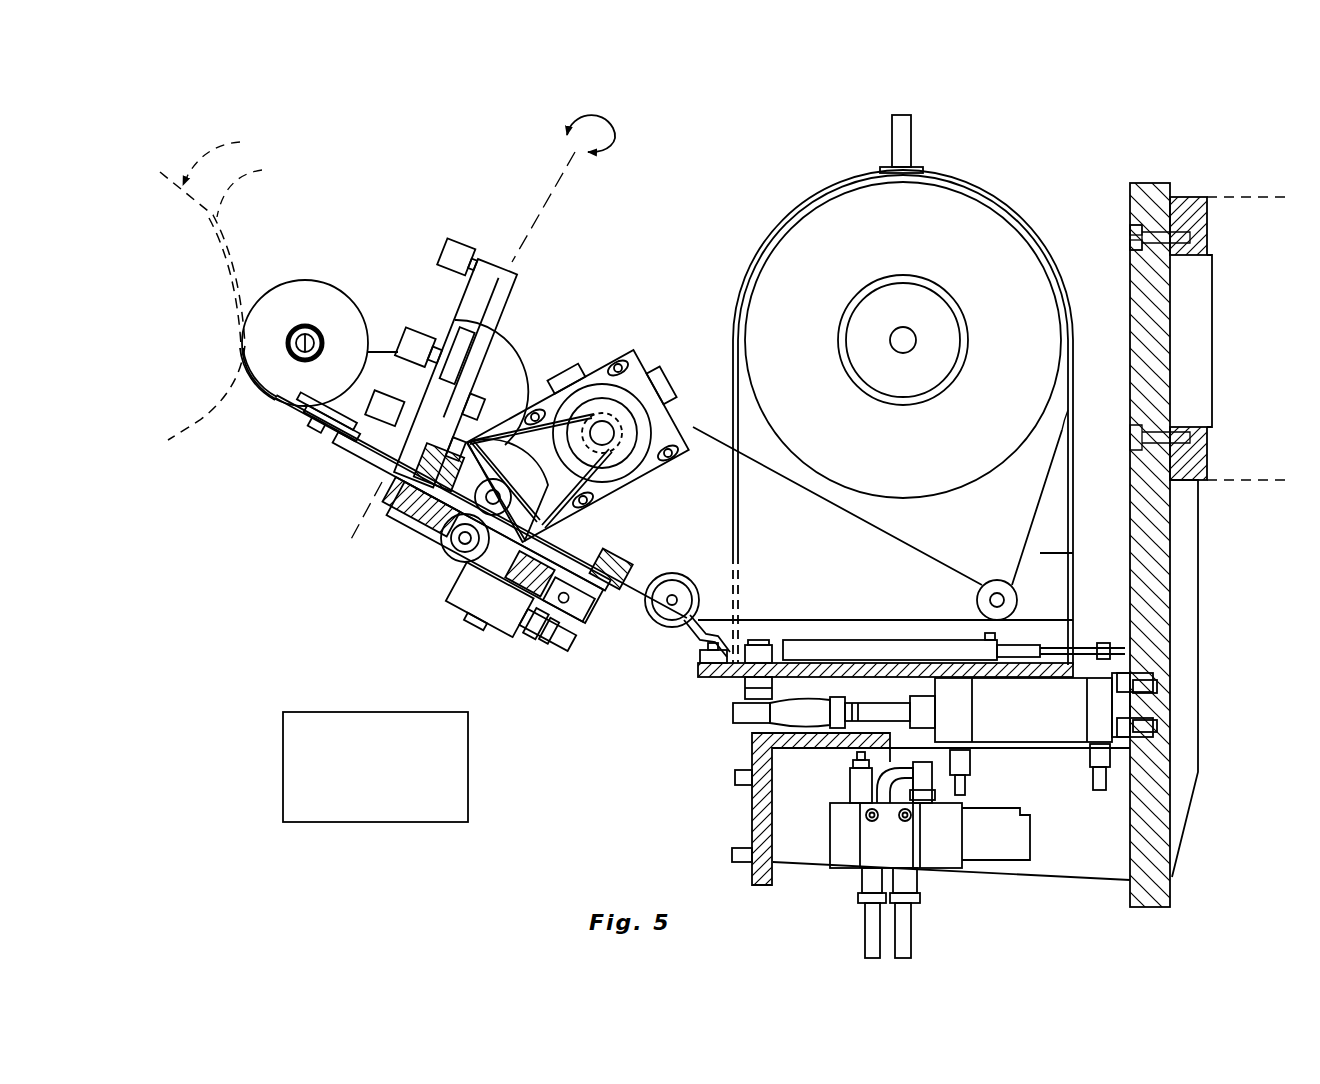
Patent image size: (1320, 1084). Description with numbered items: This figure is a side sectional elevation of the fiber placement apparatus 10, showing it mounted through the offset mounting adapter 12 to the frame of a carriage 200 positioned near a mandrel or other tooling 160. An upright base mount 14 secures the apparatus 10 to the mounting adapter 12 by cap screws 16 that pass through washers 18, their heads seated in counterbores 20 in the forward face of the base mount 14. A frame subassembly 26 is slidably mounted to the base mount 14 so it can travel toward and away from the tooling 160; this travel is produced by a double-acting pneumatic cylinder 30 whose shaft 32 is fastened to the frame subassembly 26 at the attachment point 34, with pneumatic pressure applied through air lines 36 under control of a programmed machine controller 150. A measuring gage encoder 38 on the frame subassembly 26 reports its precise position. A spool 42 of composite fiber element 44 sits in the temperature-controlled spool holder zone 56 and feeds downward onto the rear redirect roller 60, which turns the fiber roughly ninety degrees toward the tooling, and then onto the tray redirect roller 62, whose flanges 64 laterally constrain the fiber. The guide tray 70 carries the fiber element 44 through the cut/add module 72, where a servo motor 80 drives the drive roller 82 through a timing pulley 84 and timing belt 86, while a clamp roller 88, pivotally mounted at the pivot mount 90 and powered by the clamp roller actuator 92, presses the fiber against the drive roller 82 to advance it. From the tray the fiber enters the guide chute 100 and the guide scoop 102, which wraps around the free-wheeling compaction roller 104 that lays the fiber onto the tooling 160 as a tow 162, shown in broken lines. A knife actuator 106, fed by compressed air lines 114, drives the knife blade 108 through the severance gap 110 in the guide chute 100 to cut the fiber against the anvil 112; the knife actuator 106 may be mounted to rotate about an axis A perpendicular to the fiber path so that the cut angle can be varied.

The fiber placement apparatus 10 is at (735, 205).
The offset mounting adapter 12 is at (1200, 198).
The upright base mount 14 is at (1138, 185).
The cap screws 16 is at (1128, 228).
The washers 18 is at (1146, 225).
The counterbores 20 is at (1128, 242).
The frame subassembly 26 is at (705, 688).
The double-acting pneumatic cylinder 30 is at (1100, 690).
The shaft 32 is at (862, 712).
The shaft attachment point 34 is at (722, 728).
The air lines 36 is at (1090, 790).
The measuring gage encoder 38 is at (1035, 640).
The spool 42 is at (832, 208).
The composite fiber element 44 is at (254, 356).
The spool holder zone 56 is at (1062, 425).
The rear redirect roller 60 is at (1045, 520).
The tray redirect roller 62 is at (645, 620).
The flanges 64 is at (647, 590).
The guide tray 70 is at (473, 520).
The cut/add module 72 is at (652, 338).
The servo motor 80 is at (583, 410).
The drive roller 82 is at (523, 510).
The timing pulley 84 is at (598, 405).
The timing belt 86 is at (468, 333).
The clamp roller 88 is at (442, 538).
The pivot mount 90 is at (548, 630).
The clamp roller actuator 92 is at (488, 603).
The guide chute 100 is at (327, 411).
The guide scoop 102 is at (268, 402).
The compaction roller 104 is at (328, 283).
The knife actuator 106 is at (464, 376).
The knife blade 108 is at (430, 393).
The severance gap 110 is at (317, 425).
The anvil 112 is at (332, 423).
The compressed air lines 114 is at (459, 257).
The machine controller 150 is at (290, 745).
The tooling 160 is at (234, 155).
The tow 162 is at (264, 187).
The carriage 200 is at (1275, 282).
The axis A is at (563, 172).